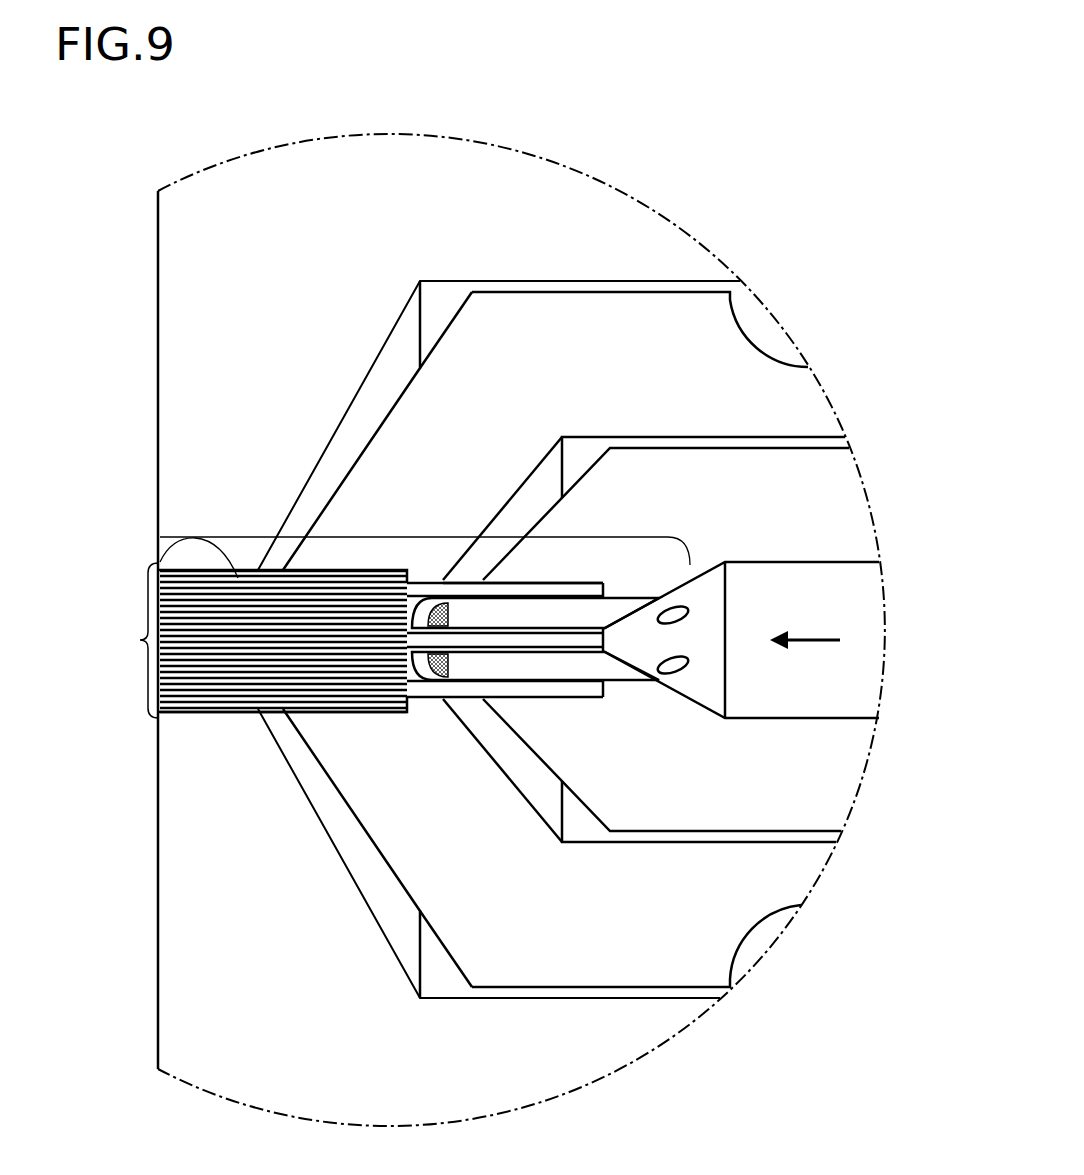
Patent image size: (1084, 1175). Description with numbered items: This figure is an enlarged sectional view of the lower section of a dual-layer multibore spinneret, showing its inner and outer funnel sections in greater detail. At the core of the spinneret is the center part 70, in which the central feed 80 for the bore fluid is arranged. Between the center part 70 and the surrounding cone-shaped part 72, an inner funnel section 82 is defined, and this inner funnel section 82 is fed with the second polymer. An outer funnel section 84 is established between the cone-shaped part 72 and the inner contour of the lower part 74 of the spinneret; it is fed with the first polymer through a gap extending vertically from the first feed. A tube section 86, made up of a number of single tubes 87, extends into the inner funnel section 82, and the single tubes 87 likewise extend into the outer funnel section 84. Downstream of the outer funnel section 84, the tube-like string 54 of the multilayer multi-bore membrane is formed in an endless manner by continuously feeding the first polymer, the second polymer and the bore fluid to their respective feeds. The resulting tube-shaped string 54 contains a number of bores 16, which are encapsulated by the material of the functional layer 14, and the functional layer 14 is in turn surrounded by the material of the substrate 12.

The substrate 12 is at (235, 713).
The functional layer 14 is at (210, 702).
The bores 16 is at (156, 562).
The tube-like string 54 is at (257, 640).
The center part 70 is at (860, 755).
The cone-shaped part 72 is at (782, 882).
The lower part 74 is at (638, 1035).
The central feed 80 is at (866, 626).
The inner funnel section 82 is at (545, 790).
The outer funnel section 84 is at (392, 894).
The tube section 86 is at (437, 533).
The single tubes 87 is at (240, 578).